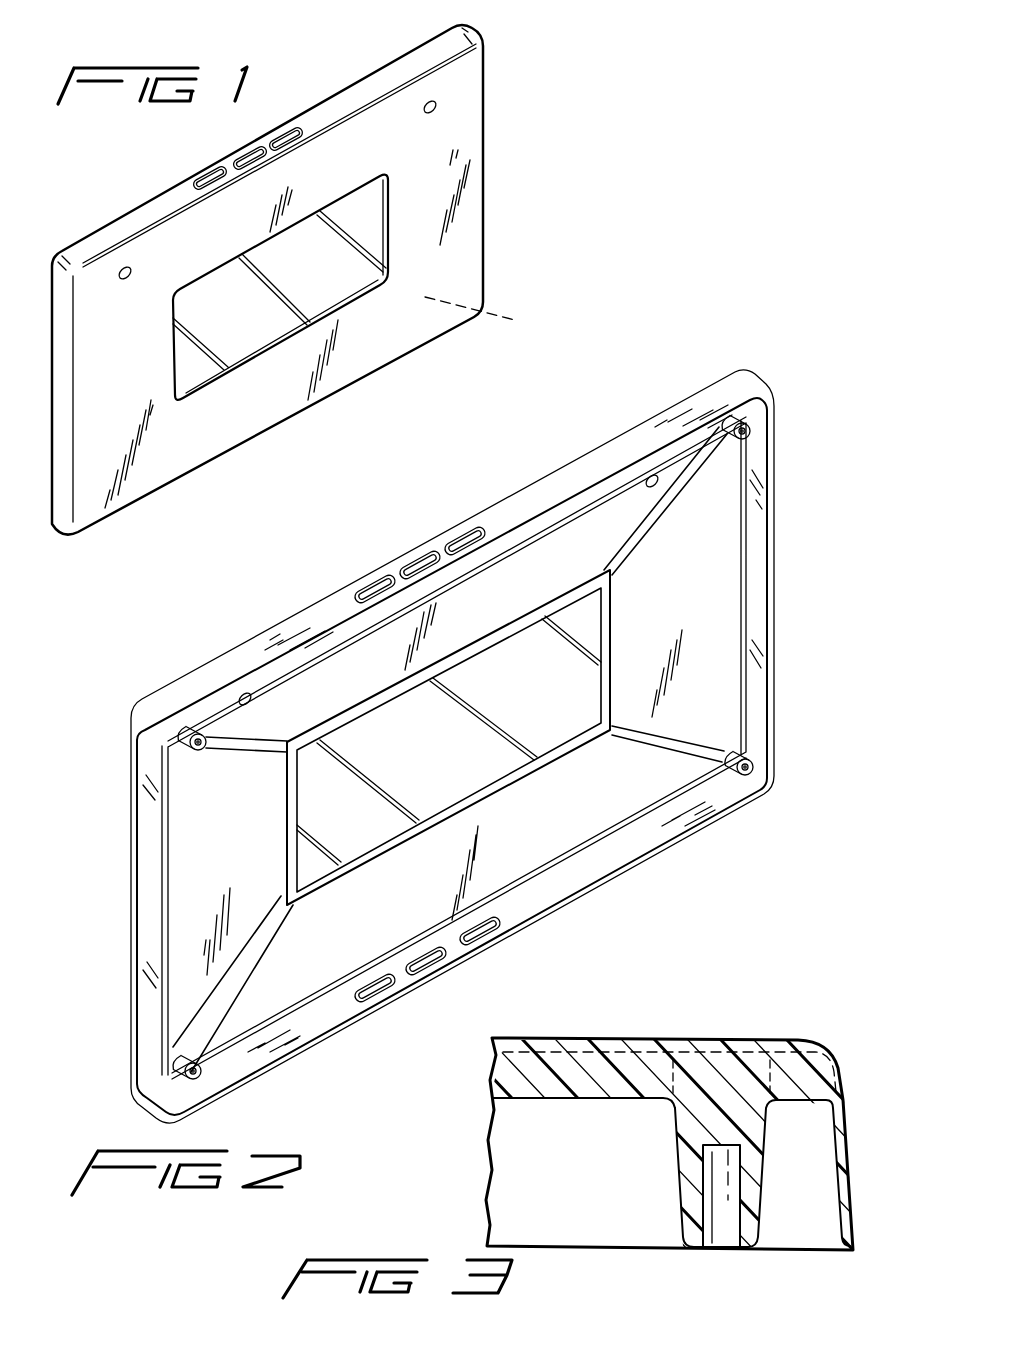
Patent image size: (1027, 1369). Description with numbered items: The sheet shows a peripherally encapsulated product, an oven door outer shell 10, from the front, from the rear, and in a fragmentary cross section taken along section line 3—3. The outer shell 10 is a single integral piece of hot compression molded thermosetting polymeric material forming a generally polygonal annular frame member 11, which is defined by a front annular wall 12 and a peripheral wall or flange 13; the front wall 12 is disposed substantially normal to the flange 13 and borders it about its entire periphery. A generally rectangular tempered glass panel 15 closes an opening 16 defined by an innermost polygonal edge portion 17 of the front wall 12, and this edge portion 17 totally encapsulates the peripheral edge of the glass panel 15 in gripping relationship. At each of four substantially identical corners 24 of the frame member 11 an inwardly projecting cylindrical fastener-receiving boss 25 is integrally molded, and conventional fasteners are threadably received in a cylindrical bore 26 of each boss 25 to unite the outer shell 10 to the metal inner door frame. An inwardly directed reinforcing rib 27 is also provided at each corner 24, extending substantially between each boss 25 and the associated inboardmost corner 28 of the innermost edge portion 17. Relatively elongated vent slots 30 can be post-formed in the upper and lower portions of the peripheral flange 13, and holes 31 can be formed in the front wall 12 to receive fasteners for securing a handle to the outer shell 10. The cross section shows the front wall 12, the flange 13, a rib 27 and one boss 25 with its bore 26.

In FIG. 1, the section line 3— 3 is at (440, 299).
In FIG. 1, the oven door outer shell 10 is at (563, 60).
In FIG. 2, the oven door outer shell 10 is at (740, 332).
In FIG. 3, the oven door outer shell 10 is at (770, 1006).
In FIG. 1, the annular frame member 11 is at (480, 122).
In FIG. 2, the annular frame member 11 is at (658, 410).
In FIG. 3, the annular frame member 11 is at (716, 1040).
In FIG. 1, the front annular wall 12 is at (361, 161).
In FIG. 2, the front annular wall 12 is at (541, 842).
In FIG. 3, the front annular wall 12 is at (577, 1040).
In FIG. 1, the peripheral flange 13 is at (140, 212).
In FIG. 2, the peripheral flange 13 is at (612, 458).
In FIG. 3, the peripheral flange 13 is at (840, 1188).
In FIG. 1, the tempered glass panel 15 is at (262, 324).
In FIG. 2, the tempered glass panel 15 is at (442, 759).
In FIG. 1, the opening 16 is at (350, 288).
In FIG. 1, the innermost polygonal edge portion 17 is at (300, 228).
In FIG. 2, the innermost polygonal edge portion 17 is at (503, 626).
In FIG. 1, the corner 24 is at (474, 55).
In FIG. 2, the corner 24 is at (752, 380).
In FIG. 3, the corner 24 is at (828, 1058).
In FIG. 2, the fastener-receiving boss 25 is at (755, 426).
In FIG. 3, the fastener-receiving boss 25 is at (670, 1188).
In FIG. 2, the cylindrical bore 26 is at (748, 433).
In FIG. 3, the cylindrical bore 26 is at (724, 1243).
In FIG. 2, the reinforcing rib 27 is at (678, 500).
In FIG. 3, the reinforcing rib 27 is at (564, 1100).
In FIG. 2, the inboardmost corner 28 is at (614, 594).
In FIG. 1, the vent slot 30 is at (242, 156).
In FIG. 2, the vent slot 30 is at (432, 562).
In FIG. 1, the hole 31 is at (430, 114).
In FIG. 2, the hole 31 is at (646, 488).